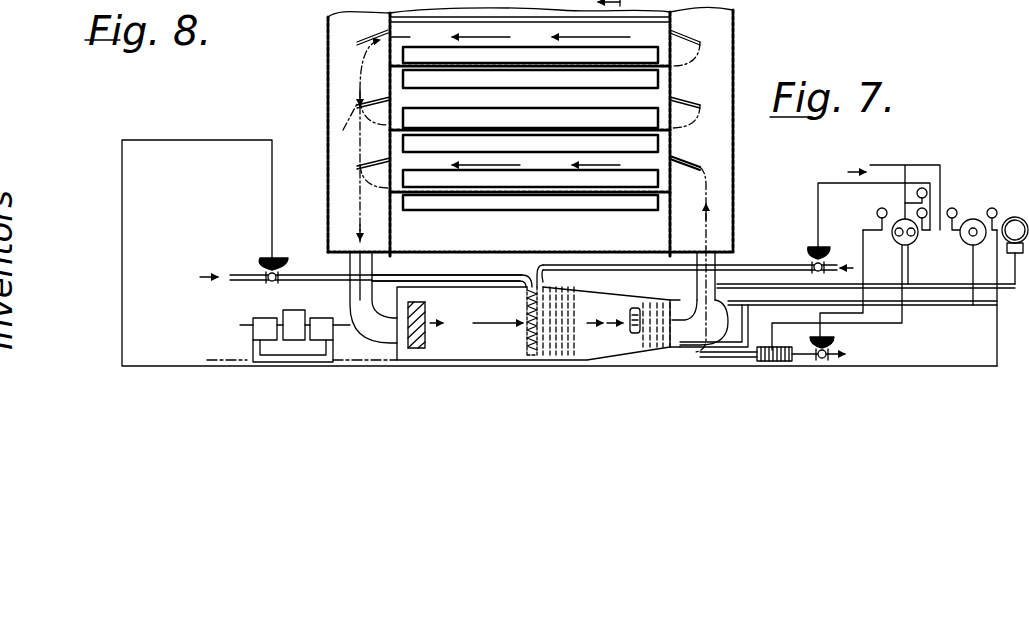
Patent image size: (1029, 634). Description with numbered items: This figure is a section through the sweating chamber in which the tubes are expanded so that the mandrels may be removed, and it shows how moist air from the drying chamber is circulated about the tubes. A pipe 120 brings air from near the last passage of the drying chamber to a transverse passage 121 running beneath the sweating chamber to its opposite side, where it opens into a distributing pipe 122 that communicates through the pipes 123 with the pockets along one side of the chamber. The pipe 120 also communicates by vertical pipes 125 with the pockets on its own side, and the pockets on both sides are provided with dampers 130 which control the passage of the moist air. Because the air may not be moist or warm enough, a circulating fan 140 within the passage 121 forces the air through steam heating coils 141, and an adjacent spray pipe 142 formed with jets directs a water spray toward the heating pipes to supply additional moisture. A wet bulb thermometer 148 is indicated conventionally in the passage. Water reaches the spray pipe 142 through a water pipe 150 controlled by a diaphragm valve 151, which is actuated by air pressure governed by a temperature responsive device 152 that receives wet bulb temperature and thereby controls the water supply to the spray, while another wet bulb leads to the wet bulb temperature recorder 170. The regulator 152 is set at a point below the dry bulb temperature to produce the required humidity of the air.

The pipe 120 is at (350, 316).
The transverse passage 121 is at (416, 287).
The distributing pipe 122 is at (712, 312).
The pipes 123 is at (718, 275).
The vertical pipes 125 is at (350, 264).
The dampers 130 is at (369, 30).
The circulating fan 140 is at (428, 310).
The steam heating coils 141 is at (570, 295).
The spray pipe 142 is at (527, 300).
The wet bulb thermometer 148 is at (634, 308).
The water pipe 150 is at (240, 281).
The diaphragm valve 151 is at (275, 258).
The temperature responsive device 152 is at (973, 219).
The wet bulb temperature recorder 170 is at (1015, 217).